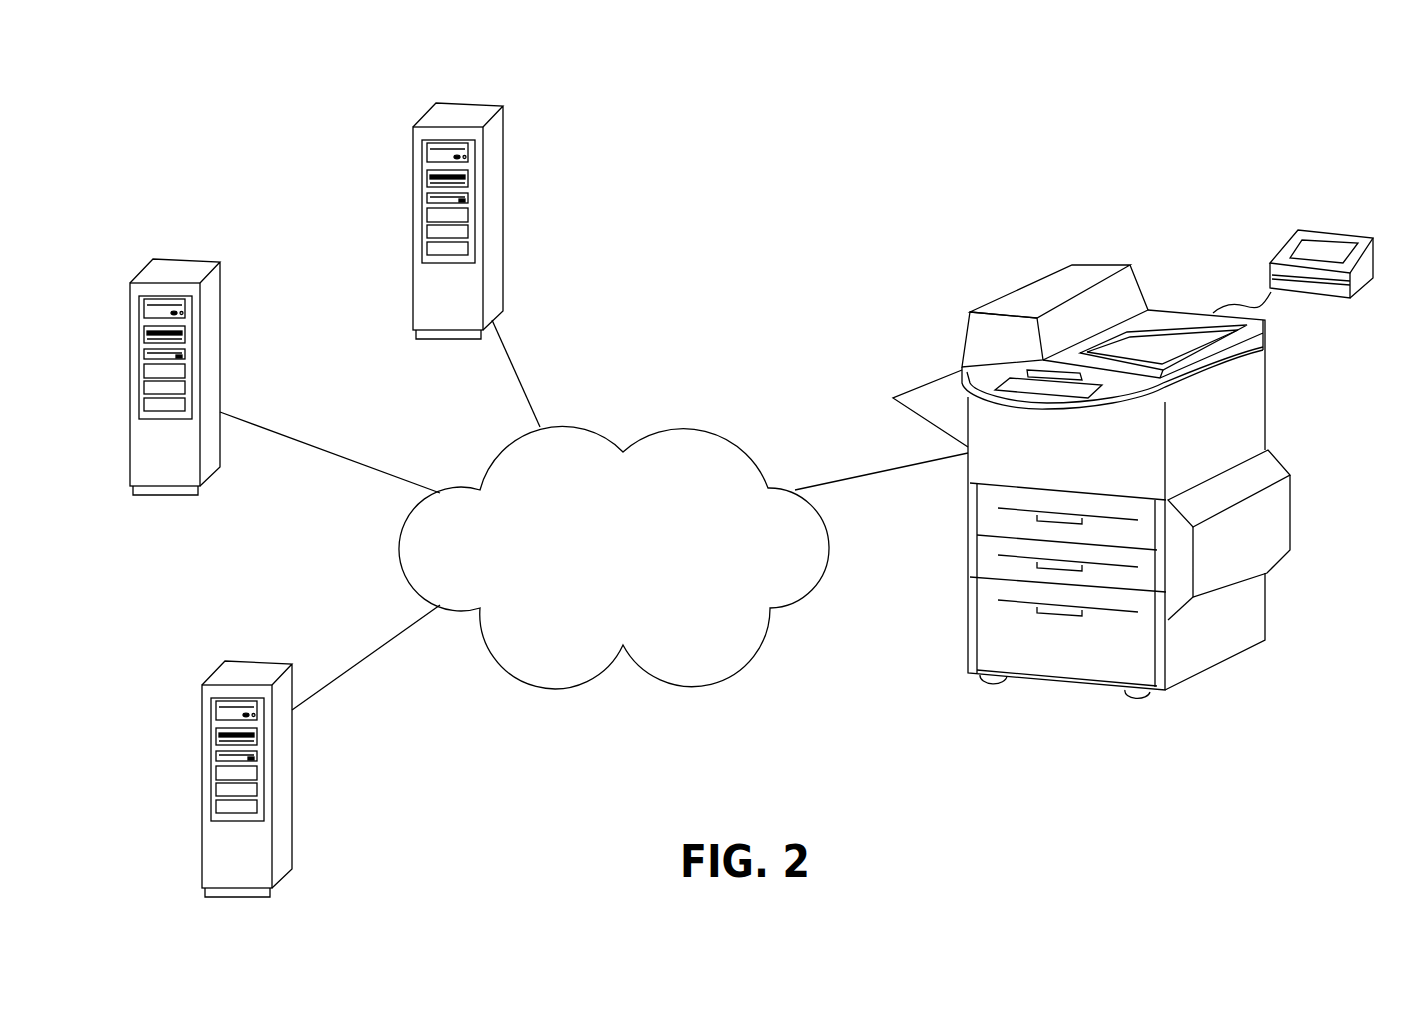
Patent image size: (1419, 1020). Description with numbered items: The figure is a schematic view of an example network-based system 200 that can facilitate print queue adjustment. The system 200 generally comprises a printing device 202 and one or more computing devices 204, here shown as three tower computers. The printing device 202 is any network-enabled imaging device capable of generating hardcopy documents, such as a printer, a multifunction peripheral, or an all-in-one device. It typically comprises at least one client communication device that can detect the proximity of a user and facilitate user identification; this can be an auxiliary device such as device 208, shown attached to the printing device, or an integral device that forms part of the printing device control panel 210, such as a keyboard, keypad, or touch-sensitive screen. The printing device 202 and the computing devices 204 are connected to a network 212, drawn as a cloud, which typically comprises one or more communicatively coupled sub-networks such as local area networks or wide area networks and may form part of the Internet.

The network-based system 200 is at (1358, 127).
The printing device 202 is at (916, 245).
The computing devices 204 is at (547, 123).
The auxiliary device 208 is at (1365, 281).
The control panel 210 is at (1008, 384).
The network 212 is at (603, 576).